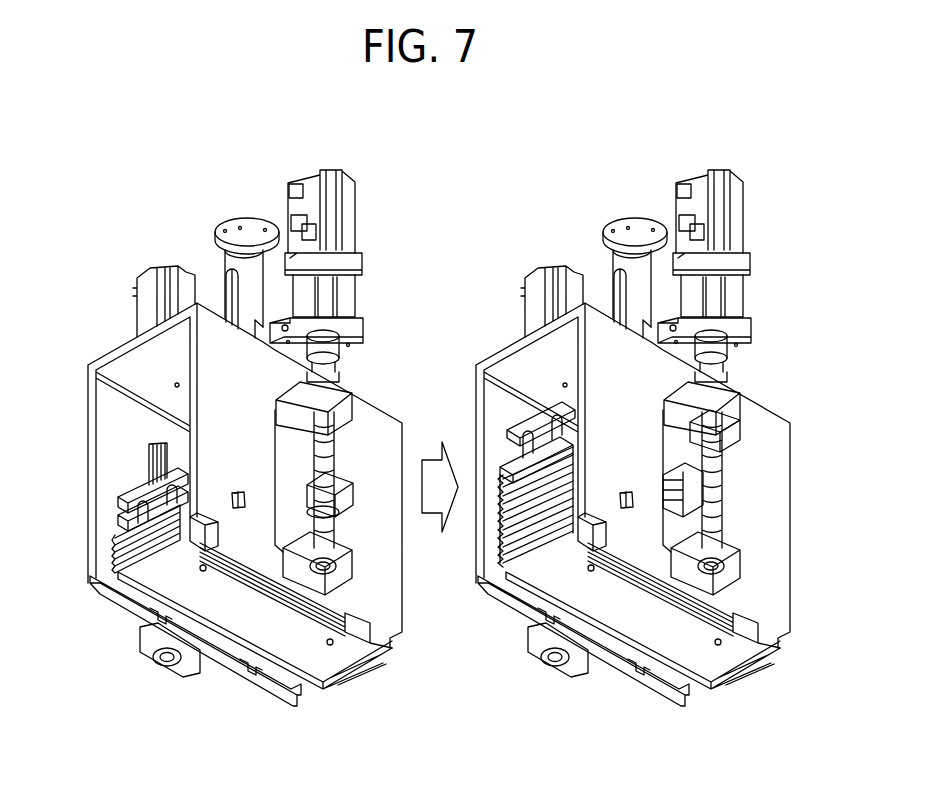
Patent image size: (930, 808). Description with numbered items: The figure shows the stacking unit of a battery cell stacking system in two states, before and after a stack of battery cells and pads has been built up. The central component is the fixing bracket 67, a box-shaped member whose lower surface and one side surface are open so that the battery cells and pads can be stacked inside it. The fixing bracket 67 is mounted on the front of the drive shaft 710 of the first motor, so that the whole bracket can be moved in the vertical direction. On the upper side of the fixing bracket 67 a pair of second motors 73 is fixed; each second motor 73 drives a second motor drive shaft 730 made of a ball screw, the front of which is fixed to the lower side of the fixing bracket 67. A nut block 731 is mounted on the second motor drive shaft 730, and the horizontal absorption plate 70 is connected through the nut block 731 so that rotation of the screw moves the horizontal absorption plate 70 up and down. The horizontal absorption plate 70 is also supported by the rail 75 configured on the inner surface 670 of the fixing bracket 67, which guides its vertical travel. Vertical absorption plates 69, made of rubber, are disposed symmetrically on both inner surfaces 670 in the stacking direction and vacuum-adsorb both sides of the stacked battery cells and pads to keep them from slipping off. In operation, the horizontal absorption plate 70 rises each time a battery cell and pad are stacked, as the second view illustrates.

The inner surface 670 is at (108, 410).
The vertical absorption plate 69 is at (112, 527).
The fixing bracket 67 is at (218, 507).
The second motor drive shaft 730 is at (718, 488).
The nut block 731 is at (332, 497).
The second motor 73 is at (148, 310).
The drive shaft 710 is at (233, 248).
The horizontal absorption plate 70 is at (130, 496).
The rail 75 is at (150, 465).